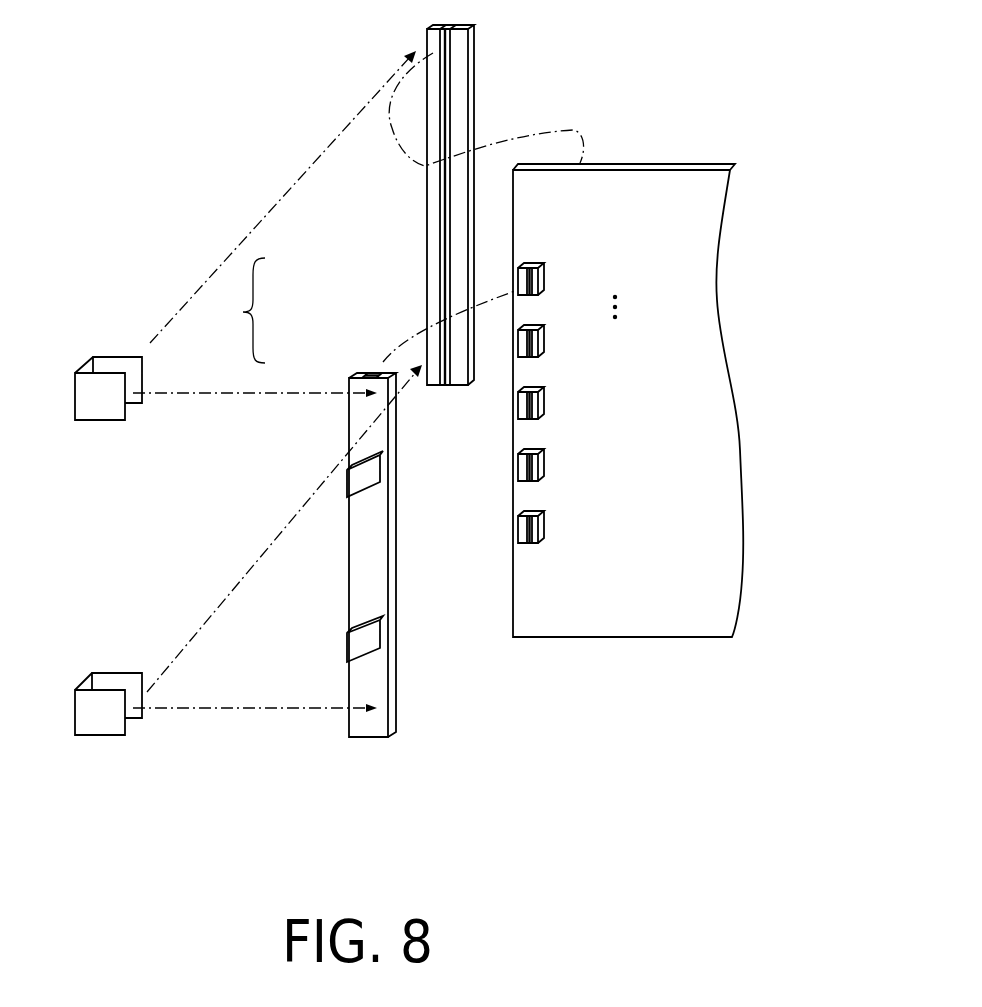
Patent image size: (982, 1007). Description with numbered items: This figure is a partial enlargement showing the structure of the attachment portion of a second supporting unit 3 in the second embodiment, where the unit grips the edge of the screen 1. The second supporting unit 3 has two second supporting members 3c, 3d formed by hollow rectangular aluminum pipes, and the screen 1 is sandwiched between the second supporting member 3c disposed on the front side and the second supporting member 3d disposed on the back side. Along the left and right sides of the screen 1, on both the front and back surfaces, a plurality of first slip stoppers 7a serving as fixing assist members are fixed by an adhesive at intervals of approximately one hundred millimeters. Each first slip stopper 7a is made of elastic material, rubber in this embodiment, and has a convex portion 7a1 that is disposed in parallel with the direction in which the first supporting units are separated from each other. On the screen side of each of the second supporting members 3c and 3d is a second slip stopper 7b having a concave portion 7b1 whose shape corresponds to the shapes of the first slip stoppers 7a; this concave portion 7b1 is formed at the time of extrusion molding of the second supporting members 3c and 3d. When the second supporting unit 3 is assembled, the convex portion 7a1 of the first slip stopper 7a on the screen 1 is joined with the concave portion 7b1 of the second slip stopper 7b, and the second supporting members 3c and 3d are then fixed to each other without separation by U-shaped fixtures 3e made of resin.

The screen 1 is at (647, 185).
The second supporting unit 3 is at (402, 381).
The second supporting member 3c is at (427, 243).
The second supporting member 3d is at (350, 413).
The U-shaped fixture 3e is at (98, 395).
The first slip stopper 7a is at (546, 333).
The convex portion 7a1 is at (530, 262).
The second slip stopper 7b is at (458, 43).
The concave portion 7b1 is at (448, 92).